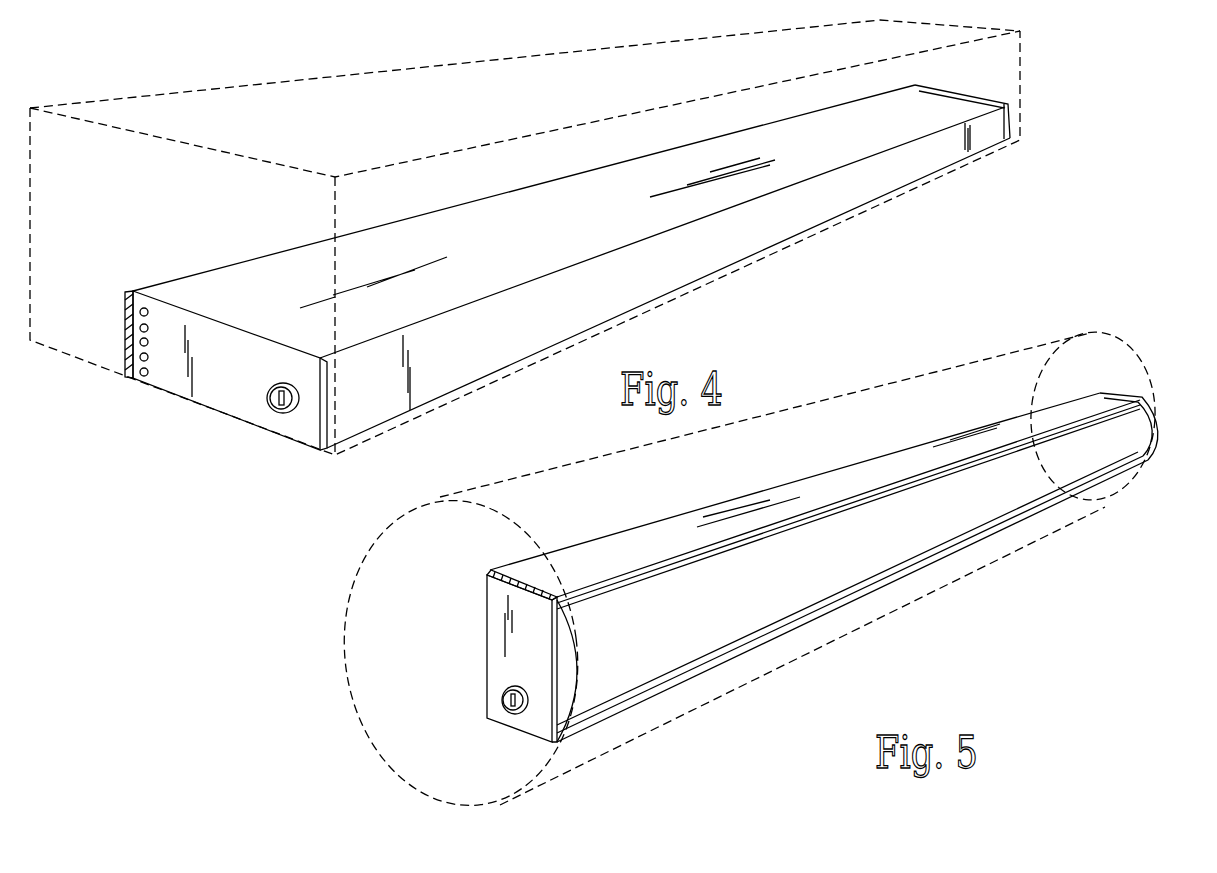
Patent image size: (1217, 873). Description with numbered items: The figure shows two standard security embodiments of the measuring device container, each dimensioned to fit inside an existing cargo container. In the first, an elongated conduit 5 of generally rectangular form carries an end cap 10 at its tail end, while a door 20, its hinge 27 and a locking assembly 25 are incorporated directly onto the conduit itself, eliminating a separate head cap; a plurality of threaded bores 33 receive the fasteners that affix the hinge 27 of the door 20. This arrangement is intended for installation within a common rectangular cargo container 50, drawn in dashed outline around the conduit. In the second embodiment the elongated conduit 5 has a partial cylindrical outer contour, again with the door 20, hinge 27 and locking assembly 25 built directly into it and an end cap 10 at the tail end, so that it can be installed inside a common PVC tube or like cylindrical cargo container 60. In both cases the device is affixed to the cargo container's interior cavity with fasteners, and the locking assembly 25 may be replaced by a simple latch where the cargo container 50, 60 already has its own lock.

In FIG. 4, the elongated conduit 5 is at (673, 278).
In FIG. 5, the elongated conduit 5 is at (703, 660).
In FIG. 4, the end cap 10 is at (1013, 120).
In FIG. 5, the end cap 10 is at (1157, 433).
In FIG. 4, the door 20 is at (165, 378).
In FIG. 5, the door 20 is at (503, 643).
In FIG. 4, the locking assembly 25 is at (267, 403).
In FIG. 5, the locking assembly 25 is at (505, 703).
In FIG. 4, the hinge 27 is at (123, 335).
In FIG. 5, the hinge 27 is at (522, 588).
In FIG. 4, the threaded bores 33 is at (137, 305).
In FIG. 4, the rectangular cargo container 50 is at (1022, 50).
In FIG. 5, the cylindrical cargo container 60 is at (1123, 332).